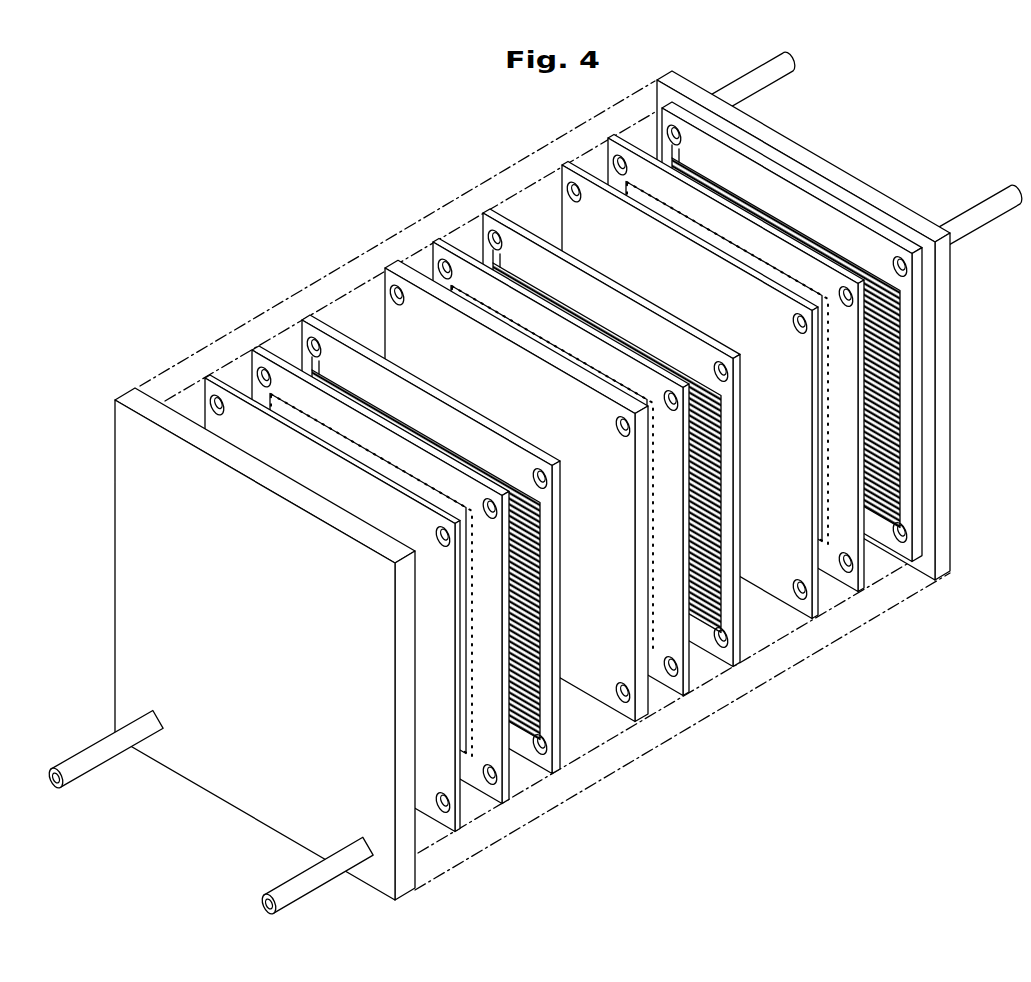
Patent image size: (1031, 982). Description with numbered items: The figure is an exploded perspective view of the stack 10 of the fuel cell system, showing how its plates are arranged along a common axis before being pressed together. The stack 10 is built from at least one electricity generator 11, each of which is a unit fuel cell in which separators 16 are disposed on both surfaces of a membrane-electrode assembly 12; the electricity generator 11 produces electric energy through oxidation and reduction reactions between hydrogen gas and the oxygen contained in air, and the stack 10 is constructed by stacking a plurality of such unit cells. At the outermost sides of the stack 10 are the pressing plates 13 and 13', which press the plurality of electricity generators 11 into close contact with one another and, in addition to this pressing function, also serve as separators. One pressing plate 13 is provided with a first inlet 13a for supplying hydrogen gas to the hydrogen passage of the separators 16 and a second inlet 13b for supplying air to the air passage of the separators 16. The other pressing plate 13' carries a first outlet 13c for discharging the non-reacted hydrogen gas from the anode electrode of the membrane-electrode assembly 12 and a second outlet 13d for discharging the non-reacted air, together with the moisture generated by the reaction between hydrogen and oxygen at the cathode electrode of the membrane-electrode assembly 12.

The stack 10 is at (900, 110).
The electricity generator 11 is at (806, 712).
The membrane-electrode assembly 12 is at (692, 689).
The pressing plate 13 is at (829, 325).
The pressing plate 13' is at (297, 653).
The first inlet 13a is at (752, 73).
The second inlet 13b is at (974, 203).
The first outlet 13c is at (314, 885).
The second outlet 13d is at (71, 760).
The separator 16 is at (744, 659).